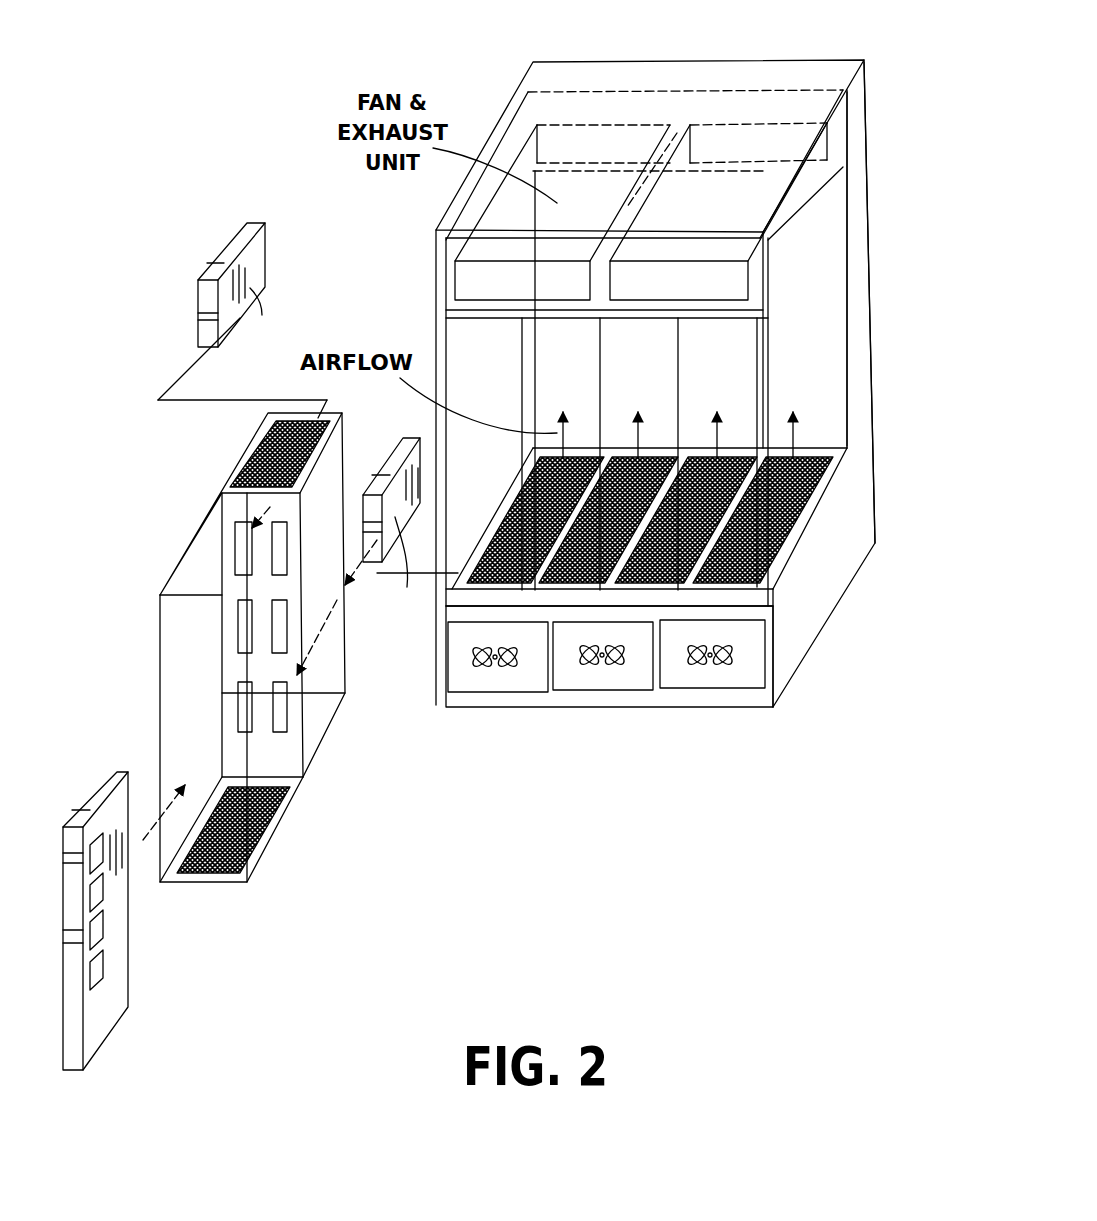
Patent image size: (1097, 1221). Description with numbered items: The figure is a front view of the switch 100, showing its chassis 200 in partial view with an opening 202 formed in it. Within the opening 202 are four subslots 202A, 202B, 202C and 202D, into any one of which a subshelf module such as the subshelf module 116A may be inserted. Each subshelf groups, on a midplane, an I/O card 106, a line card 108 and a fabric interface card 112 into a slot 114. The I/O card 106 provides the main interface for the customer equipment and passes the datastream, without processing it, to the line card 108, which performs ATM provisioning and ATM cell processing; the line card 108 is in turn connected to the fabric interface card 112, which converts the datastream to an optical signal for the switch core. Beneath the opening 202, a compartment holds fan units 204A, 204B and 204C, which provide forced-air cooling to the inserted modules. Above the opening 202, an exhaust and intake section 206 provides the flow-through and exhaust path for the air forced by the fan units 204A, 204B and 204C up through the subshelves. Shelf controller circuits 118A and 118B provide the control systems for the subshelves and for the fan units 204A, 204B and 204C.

The switch 100 is at (603, 888).
The chassis 200 is at (767, 58).
The opening 202 is at (835, 230).
The subslot 202A is at (727, 352).
The subslot 202B is at (650, 375).
The subslot 202C is at (557, 380).
The subslot 202D is at (473, 342).
The fan unit 204A is at (523, 678).
The fan unit 204B is at (630, 678).
The fan unit 204C is at (740, 676).
The exhaust and intake section 206 is at (727, 313).
The shelf controller circuit 118A is at (507, 285).
The shelf controller circuit 118B is at (727, 277).
The fabric interface card 112 is at (235, 238).
The I/O card 106 is at (395, 463).
The line card 108 is at (72, 810).
The subshelf module 116A is at (190, 543).
The slot 114 is at (295, 760).